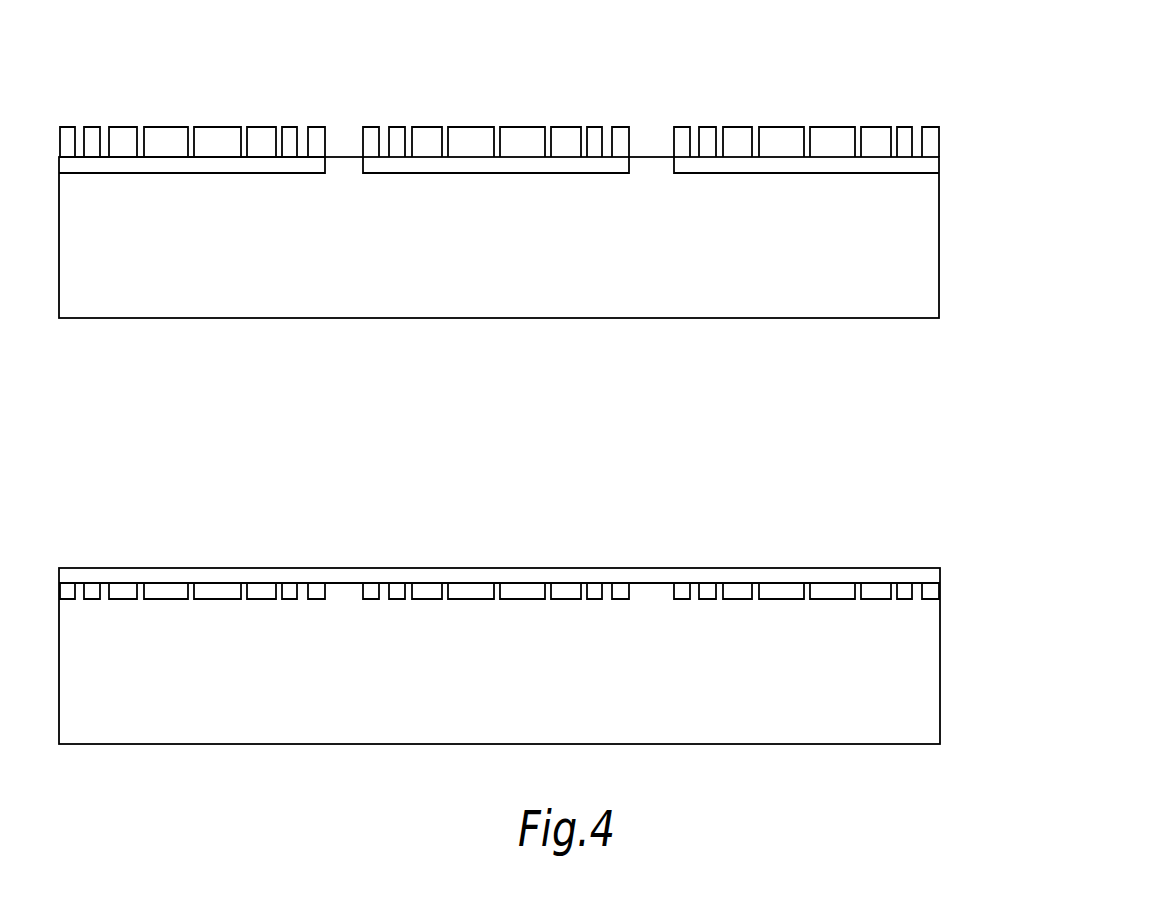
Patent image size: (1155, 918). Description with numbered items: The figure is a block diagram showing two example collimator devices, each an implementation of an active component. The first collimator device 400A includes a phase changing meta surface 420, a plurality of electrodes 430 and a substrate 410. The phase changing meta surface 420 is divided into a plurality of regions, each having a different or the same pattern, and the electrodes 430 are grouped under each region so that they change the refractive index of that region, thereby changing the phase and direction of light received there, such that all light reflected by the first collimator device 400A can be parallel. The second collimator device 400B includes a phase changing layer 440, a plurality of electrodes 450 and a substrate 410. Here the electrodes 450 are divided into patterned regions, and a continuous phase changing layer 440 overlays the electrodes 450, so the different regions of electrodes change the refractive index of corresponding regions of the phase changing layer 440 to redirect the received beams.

The first collimator device 400A is at (1033, 82).
The second collimator device 400B is at (1033, 507).
The substrate 410 is at (935, 243).
The phase changing meta surface 420 is at (877, 127).
The electrodes 430 is at (935, 166).
The phase changing layer 440 is at (921, 567).
The electrodes 450 is at (935, 591).